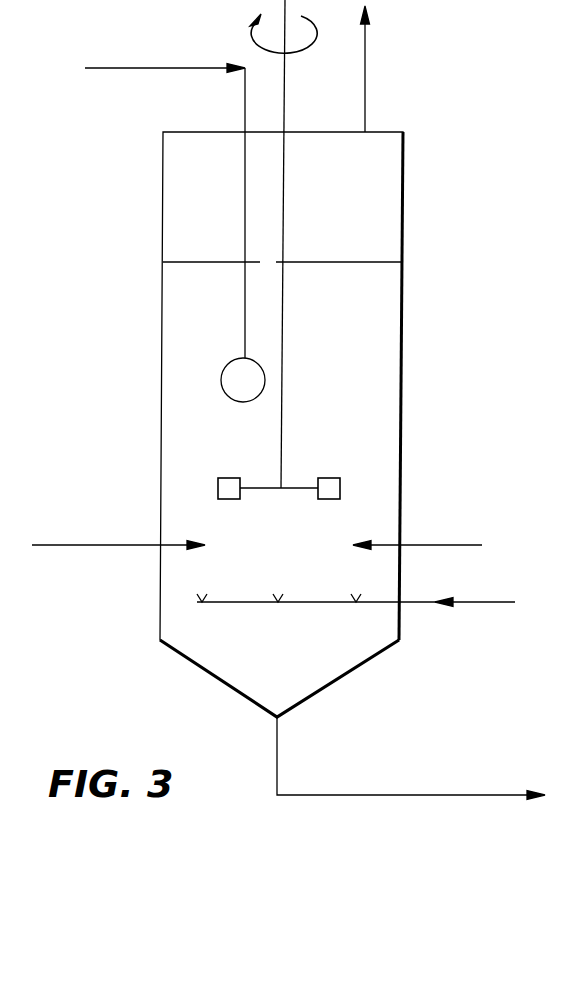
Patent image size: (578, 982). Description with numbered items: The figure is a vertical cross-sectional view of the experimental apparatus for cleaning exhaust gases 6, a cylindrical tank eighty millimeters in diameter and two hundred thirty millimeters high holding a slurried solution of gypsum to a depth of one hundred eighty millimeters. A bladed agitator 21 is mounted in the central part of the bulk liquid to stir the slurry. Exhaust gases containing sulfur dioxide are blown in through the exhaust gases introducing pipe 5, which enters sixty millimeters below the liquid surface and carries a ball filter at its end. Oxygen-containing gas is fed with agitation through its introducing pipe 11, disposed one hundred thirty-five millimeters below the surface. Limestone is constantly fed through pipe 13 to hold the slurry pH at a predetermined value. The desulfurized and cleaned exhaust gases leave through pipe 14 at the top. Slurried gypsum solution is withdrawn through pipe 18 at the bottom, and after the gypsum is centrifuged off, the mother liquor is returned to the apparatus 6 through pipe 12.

The exhaust gases introducing pipe 5 is at (175, 224).
The apparatus for cleaning exhaust gases 6 is at (289, 424).
The introducing pipe 11 is at (360, 594).
The pipe 12 is at (417, 535).
The pipe 13 is at (118, 535).
The pipe 14 is at (380, 69).
The pipe 18 is at (411, 758).
The bladed agitator 21 is at (293, 490).